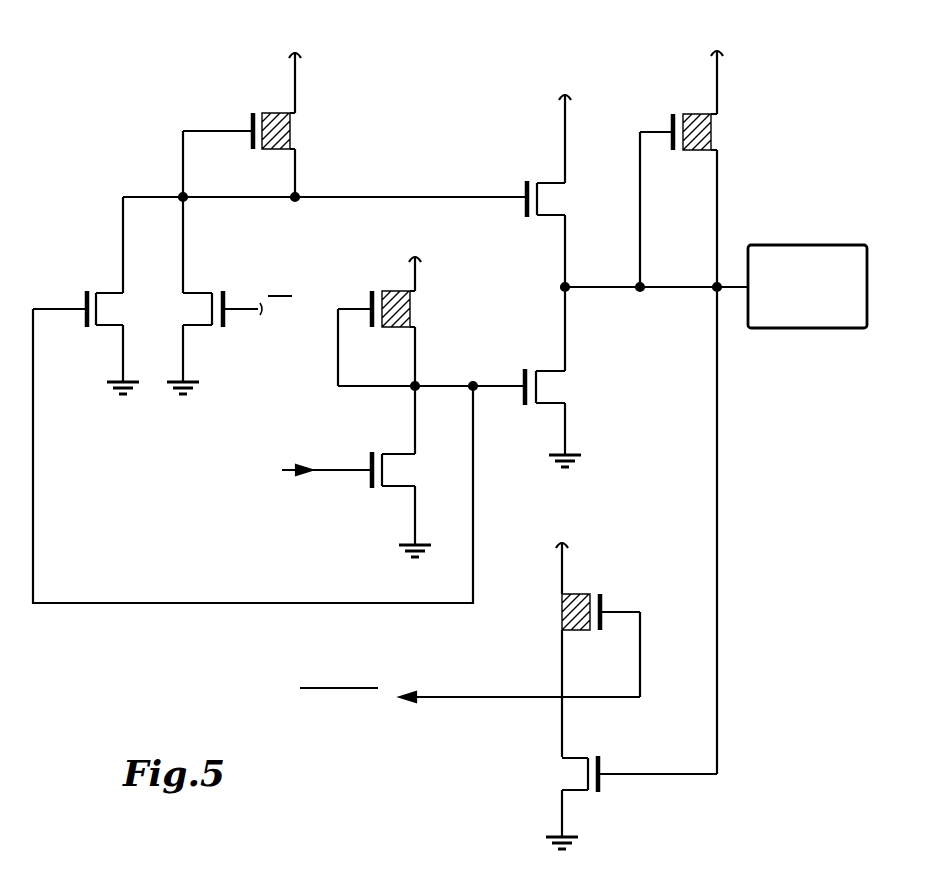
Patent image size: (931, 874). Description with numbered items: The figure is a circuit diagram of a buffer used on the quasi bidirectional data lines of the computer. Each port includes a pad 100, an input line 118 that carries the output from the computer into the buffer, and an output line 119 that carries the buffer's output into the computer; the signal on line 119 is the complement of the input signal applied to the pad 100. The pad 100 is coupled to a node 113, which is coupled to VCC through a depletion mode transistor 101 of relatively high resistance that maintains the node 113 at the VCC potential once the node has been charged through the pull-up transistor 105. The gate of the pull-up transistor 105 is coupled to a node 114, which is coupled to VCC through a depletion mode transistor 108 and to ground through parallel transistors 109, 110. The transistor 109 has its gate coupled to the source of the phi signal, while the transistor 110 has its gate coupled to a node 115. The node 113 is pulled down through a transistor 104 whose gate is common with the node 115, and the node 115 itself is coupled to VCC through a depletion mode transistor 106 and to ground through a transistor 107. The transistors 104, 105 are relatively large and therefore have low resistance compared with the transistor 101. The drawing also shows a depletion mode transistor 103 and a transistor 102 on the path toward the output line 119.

The pad 100 is at (783, 245).
The depletion mode transistor 101 is at (712, 139).
The input transistor 102 is at (566, 780).
The depletion load transistor of input inverter 103 is at (566, 612).
The transistor 104 is at (540, 388).
The pull-up transistor 105 is at (540, 196).
The depletion mode transistor 106 is at (416, 312).
The transistor 107 is at (385, 462).
The depletion mode transistor 108 is at (297, 136).
The transistor 109 is at (190, 298).
The transistor 110 is at (118, 291).
The node 113 is at (640, 290).
The node 114 is at (437, 197).
The node 115 is at (338, 386).
The input line 118 is at (324, 472).
The output line 119 is at (496, 697).